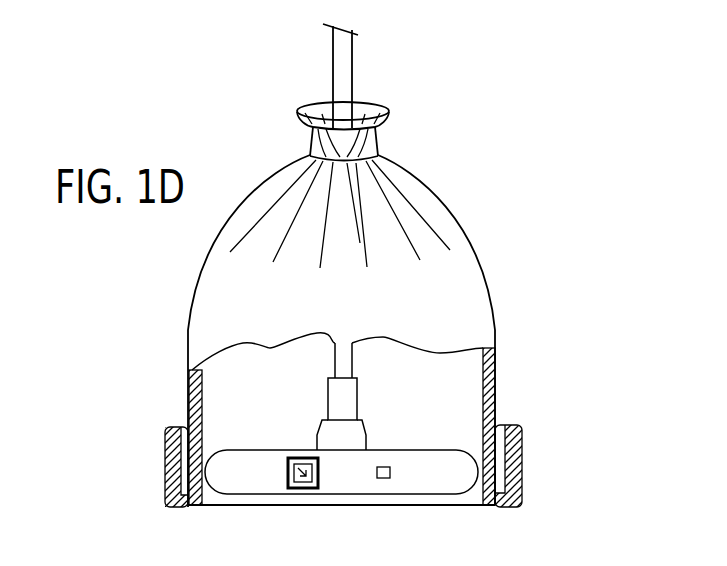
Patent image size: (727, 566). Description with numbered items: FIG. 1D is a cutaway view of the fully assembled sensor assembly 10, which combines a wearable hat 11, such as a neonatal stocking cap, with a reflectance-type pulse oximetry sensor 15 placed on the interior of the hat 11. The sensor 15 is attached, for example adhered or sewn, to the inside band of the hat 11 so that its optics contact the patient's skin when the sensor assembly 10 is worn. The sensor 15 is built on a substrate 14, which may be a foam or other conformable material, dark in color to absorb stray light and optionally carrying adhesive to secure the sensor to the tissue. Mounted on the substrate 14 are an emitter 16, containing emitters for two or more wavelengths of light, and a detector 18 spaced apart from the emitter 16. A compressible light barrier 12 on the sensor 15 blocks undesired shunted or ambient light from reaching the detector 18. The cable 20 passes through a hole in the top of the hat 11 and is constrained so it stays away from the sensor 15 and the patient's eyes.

The sensor assembly 10 is at (224, 127).
The hat 11 is at (490, 287).
The cable 20 is at (352, 80).
The reflectance-type pulse oximetry sensor 15 is at (235, 428).
The substrate 14 is at (340, 493).
The compressible light barrier 12 is at (288, 483).
The emitter 16 is at (298, 457).
The detector 18 is at (389, 468).